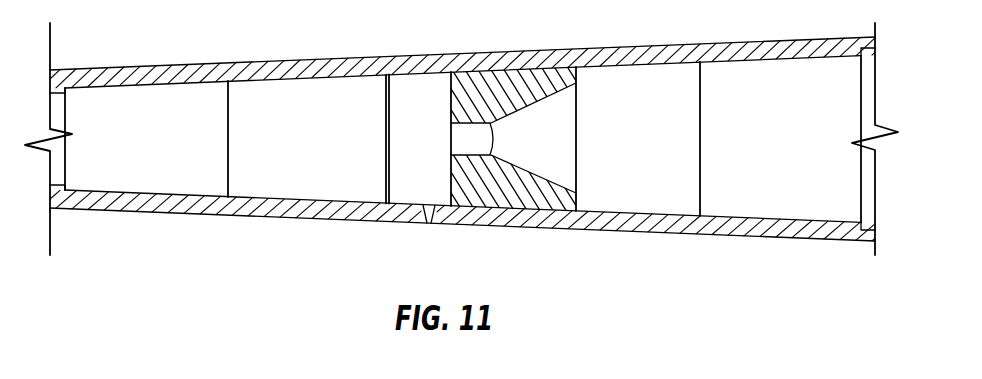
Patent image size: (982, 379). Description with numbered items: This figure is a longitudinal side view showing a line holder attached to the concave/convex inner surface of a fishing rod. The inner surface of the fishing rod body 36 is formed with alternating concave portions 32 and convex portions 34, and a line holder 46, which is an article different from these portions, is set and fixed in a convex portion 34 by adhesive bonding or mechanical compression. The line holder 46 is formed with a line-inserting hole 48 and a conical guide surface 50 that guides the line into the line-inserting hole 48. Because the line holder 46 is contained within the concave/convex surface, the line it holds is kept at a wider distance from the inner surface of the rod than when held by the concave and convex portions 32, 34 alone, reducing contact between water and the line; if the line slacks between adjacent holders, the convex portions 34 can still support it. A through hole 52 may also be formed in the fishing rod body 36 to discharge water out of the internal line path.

The concave portion 32 is at (358, 80).
The convex portion 34 is at (233, 86).
The fishing rod body 36 is at (245, 54).
The line holder 46 is at (563, 158).
The line-inserting hole 48 is at (466, 137).
The conical guide surface 50 is at (556, 96).
The through hole 52 is at (427, 234).